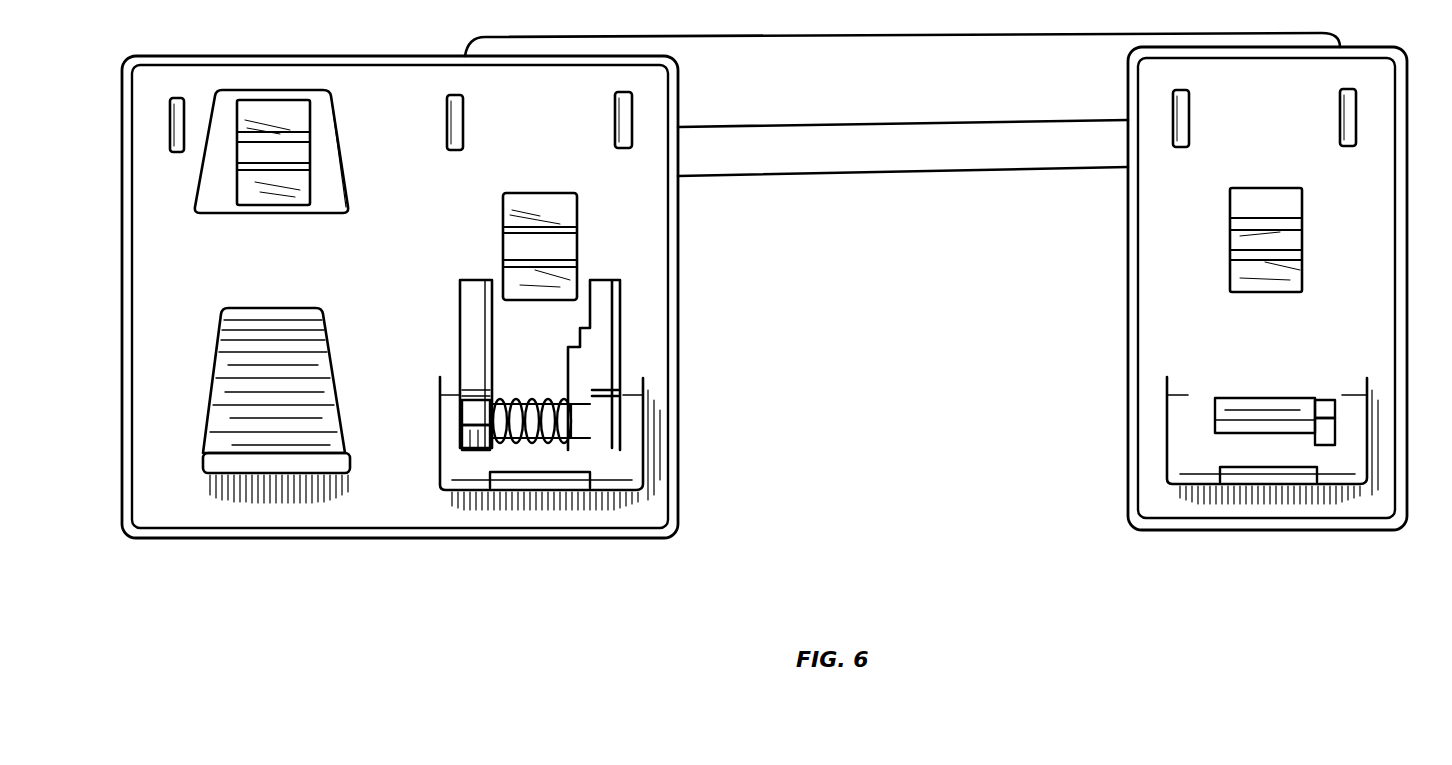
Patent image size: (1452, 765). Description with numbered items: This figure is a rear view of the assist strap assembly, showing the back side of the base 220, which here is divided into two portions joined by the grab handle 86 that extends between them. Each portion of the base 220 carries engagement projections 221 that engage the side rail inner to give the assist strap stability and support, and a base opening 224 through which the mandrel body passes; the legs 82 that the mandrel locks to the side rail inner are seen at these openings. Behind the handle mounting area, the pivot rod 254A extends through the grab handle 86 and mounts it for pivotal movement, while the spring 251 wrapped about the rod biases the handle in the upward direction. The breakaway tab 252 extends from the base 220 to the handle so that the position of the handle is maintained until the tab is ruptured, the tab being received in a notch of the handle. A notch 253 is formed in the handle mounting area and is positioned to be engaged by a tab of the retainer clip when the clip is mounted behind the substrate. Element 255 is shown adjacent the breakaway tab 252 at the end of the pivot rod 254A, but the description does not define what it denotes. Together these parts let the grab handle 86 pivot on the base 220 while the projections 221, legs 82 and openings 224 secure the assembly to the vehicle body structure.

The legs 82 is at (250, 187).
The grab handle 86 is at (862, 168).
The base 220 is at (678, 318).
The engagement projections 221 is at (172, 108).
The base opening 224 is at (302, 150).
The spring 251 is at (536, 396).
The breakaway tab 252 is at (470, 421).
The notch 253 is at (500, 492).
The pivot rod 254A is at (583, 445).
The retaining clip 255 is at (465, 446).